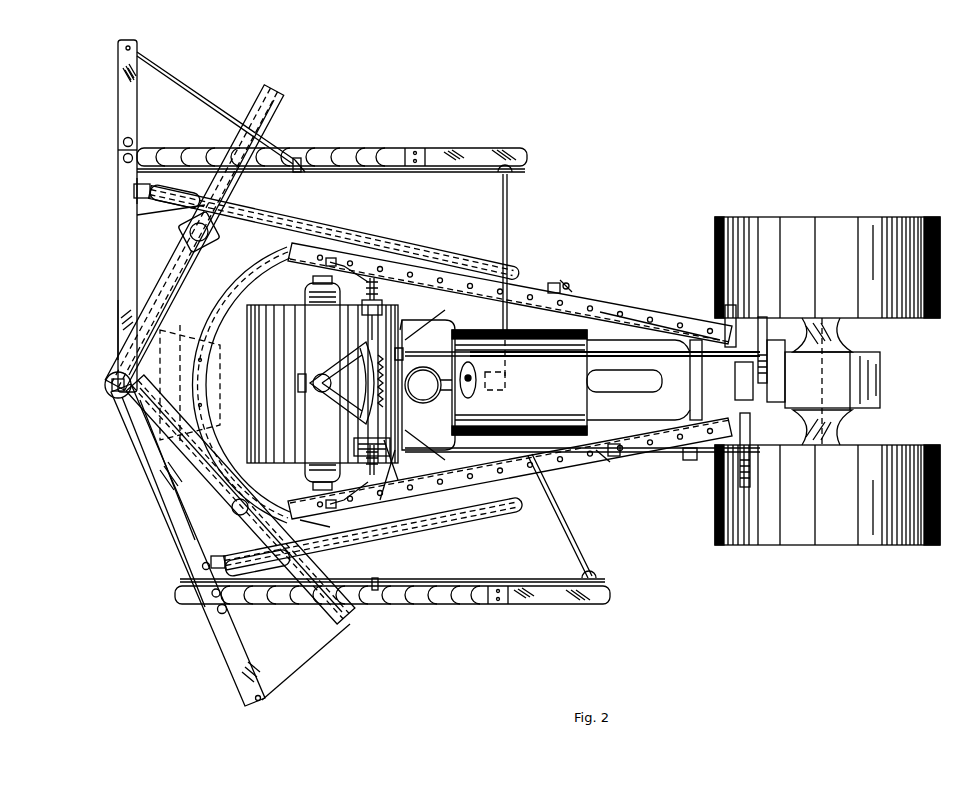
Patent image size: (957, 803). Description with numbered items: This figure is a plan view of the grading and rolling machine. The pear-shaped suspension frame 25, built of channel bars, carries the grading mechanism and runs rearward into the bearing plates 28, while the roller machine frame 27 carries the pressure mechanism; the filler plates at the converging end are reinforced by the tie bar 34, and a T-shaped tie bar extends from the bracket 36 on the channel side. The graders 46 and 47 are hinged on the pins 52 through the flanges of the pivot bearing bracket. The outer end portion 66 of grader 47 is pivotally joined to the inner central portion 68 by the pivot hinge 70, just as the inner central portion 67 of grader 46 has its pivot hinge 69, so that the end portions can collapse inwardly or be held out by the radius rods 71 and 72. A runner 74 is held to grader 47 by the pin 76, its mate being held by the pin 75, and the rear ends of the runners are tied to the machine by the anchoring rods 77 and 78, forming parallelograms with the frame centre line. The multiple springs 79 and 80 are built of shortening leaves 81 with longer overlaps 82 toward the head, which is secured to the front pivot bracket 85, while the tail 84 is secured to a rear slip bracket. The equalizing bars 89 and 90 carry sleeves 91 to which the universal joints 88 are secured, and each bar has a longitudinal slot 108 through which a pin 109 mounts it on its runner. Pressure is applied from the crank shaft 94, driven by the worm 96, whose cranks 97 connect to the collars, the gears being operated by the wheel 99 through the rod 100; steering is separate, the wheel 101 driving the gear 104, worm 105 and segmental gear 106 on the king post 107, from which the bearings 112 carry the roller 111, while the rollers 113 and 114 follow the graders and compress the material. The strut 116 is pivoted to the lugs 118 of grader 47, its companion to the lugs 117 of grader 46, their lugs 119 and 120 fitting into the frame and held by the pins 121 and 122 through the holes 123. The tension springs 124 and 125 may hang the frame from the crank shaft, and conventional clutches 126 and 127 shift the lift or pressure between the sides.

The suspension frame 25 is at (566, 300).
The roller machine frame 27 is at (310, 400).
The bearing plates 28 is at (880, 368).
The tie bar 34 is at (196, 350).
The bracket 36 is at (392, 516).
The grader 46 is at (118, 112).
The grader 47 is at (180, 512).
The pins 52 is at (110, 390).
The outer end portion 66 is at (240, 662).
The inner central portion 67 is at (118, 304).
The inner central portion 68 is at (118, 62).
The pivot hinge 69 is at (122, 143).
The pivot hinge 70 is at (218, 613).
The radius rod 71 is at (168, 74).
The radius rod 72 is at (300, 664).
The runner 74 is at (578, 606).
The pin 75 is at (480, 148).
The pin 76 is at (122, 160).
The anchoring rod 77 is at (508, 205).
The anchoring rod 78 is at (560, 512).
The multiple spring 79 is at (368, 150).
The multiple spring 80 is at (428, 606).
The leaves 81 is at (330, 152).
The overlaps 82 is at (412, 148).
The tail 84 is at (452, 148).
The front pivot bracket 85 is at (137, 148).
The universal joint 88 is at (208, 240).
The equalizing bar 89 is at (280, 92).
The equalizing bar 90 is at (348, 626).
The sleeve 91 is at (137, 230).
The crank shaft 94 is at (415, 320).
The worm 96 is at (392, 505).
The cranks 97 is at (338, 258).
The wheel 99 is at (740, 482).
The rod 100 is at (688, 458).
The wheel 101 is at (758, 330).
The gear 104 is at (440, 320).
The worm 105 is at (452, 330).
The segmental gear 106 is at (374, 282).
The king post 107 is at (300, 386).
The longitudinal slot 108 is at (270, 114).
The pin 109 is at (270, 152).
The roller 111 is at (240, 350).
The bearings 112 is at (318, 478).
The roller 113 is at (772, 218).
The roller 114 is at (786, 546).
The strut 116 is at (516, 262).
The lugs 117 is at (136, 192).
The lugs 118 is at (203, 569).
The lug 119 is at (562, 285).
The lug 120 is at (616, 458).
The pin 121 is at (570, 280).
The pin 122 is at (606, 462).
The holes 123 is at (615, 308).
The tension spring 124 is at (402, 350).
The tension spring 125 is at (390, 470).
The clutch 126 is at (448, 330).
The clutch 127 is at (368, 458).